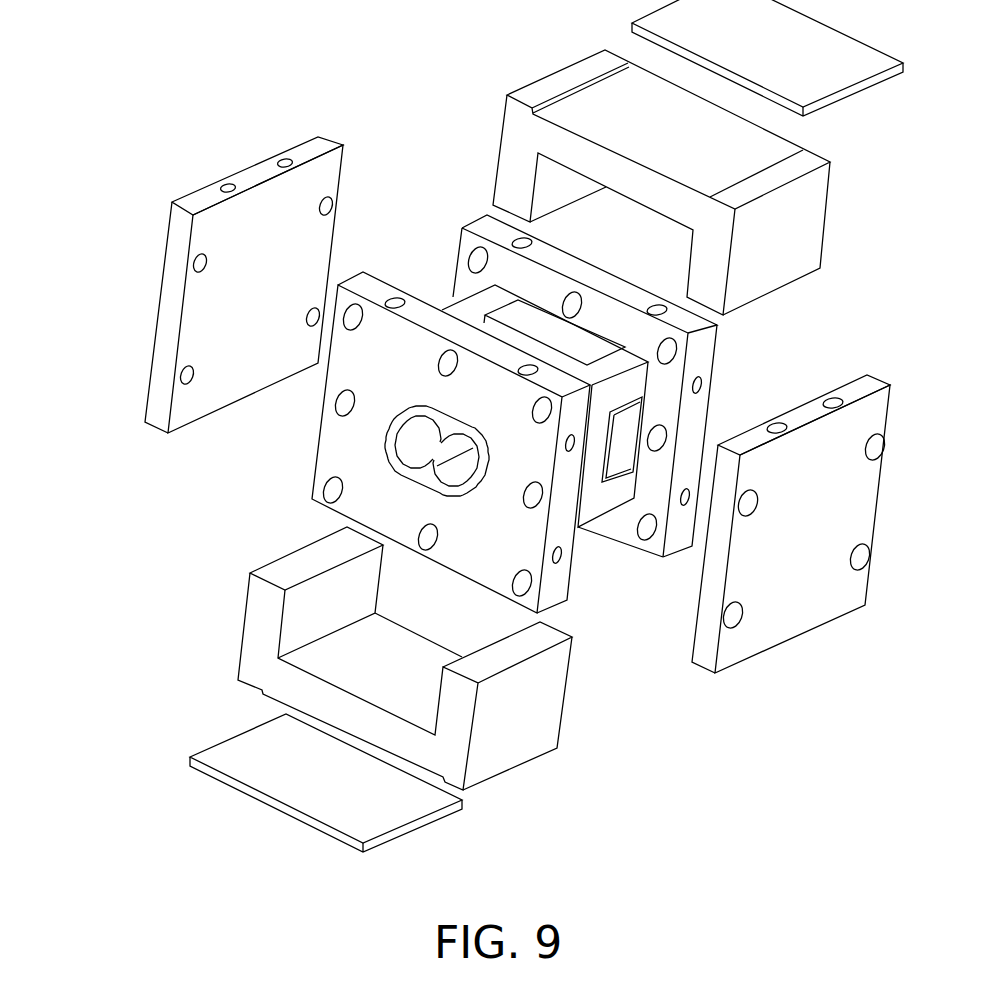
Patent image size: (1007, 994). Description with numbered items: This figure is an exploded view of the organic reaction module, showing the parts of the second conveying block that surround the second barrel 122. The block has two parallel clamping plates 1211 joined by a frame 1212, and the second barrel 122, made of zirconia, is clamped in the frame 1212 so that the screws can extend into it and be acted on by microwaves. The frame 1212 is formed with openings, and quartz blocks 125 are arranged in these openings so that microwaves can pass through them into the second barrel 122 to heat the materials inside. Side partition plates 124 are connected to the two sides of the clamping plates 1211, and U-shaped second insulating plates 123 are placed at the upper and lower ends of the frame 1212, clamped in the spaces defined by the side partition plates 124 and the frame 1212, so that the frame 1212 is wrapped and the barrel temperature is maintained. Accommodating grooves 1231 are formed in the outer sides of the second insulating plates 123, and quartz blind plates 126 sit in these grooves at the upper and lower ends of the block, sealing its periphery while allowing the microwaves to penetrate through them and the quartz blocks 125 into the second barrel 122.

The second barrel 122 is at (396, 366).
The clamping plates 1211 is at (335, 433).
The frame 1212 is at (467, 310).
The second insulating plates 123 is at (661, 182).
The accommodating grooves 1231 is at (533, 113).
The side partition plates 124 is at (172, 290).
The quartz blocks 125 is at (573, 345).
The quartz blind plates 126 is at (860, 88).